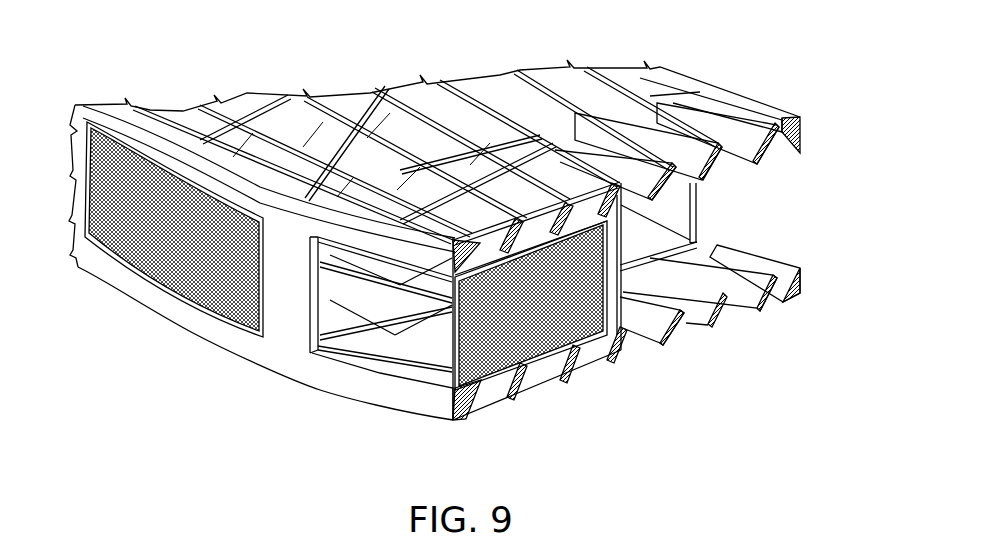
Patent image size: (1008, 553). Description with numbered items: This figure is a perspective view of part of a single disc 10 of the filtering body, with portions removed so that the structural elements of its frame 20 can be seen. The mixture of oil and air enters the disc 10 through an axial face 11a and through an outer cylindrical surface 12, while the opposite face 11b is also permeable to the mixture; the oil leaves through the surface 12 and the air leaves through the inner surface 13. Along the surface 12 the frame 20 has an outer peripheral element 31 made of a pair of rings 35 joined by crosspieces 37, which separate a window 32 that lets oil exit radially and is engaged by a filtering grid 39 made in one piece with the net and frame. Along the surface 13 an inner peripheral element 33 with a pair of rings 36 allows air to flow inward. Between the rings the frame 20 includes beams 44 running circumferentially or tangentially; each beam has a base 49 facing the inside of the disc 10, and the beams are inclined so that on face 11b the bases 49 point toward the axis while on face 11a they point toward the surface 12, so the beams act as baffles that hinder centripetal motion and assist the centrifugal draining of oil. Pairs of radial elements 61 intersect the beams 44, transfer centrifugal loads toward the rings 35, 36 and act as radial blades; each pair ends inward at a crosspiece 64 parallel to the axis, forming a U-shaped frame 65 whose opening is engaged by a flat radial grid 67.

The disc 10 is at (784, 358).
The axial face 11a is at (682, 95).
The face 11b is at (747, 318).
The outer cylindrical surface 12 is at (438, 398).
The surface 13 is at (790, 262).
The frame 20 is at (416, 76).
The outer peripheral element 31 is at (315, 392).
The window 32 is at (212, 320).
The inner peripheral element 33 is at (796, 114).
The rings 35 is at (150, 124).
The rings 36 is at (802, 135).
The crosspieces 37 is at (288, 325).
The grid 39 is at (175, 262).
The beams 44 is at (719, 323).
The base 49 is at (731, 165).
The elements 61 is at (548, 205).
The crosspiece 64 is at (614, 237).
The U-shaped frame 65 is at (600, 375).
The grid 67 is at (526, 348).